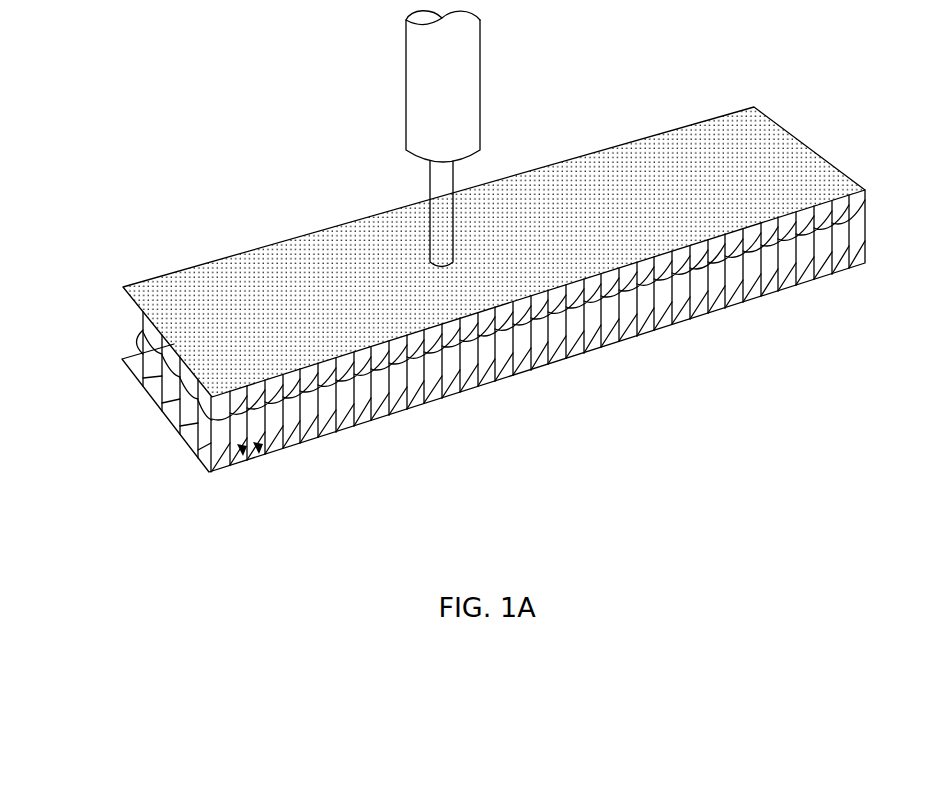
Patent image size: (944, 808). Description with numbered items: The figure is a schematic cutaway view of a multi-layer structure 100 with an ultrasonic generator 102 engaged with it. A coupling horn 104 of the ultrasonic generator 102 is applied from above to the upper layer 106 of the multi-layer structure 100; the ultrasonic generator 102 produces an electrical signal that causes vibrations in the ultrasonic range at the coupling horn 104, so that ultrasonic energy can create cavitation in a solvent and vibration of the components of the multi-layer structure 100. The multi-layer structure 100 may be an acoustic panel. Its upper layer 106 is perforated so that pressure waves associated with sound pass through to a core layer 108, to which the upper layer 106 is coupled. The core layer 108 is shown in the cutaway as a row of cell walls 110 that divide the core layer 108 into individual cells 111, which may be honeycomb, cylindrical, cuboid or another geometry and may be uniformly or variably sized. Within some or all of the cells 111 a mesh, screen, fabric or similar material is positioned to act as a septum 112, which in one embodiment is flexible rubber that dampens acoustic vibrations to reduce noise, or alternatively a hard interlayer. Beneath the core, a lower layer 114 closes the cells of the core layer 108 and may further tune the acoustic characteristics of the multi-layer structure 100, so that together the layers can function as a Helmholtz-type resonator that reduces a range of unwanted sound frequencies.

The multi-layer structure 100 is at (262, 146).
The ultrasonic generator 102 is at (406, 72).
The coupling horn 104 is at (430, 188).
The upper layer 106 is at (218, 259).
The core layer 108 is at (118, 358).
The cell walls 110 is at (182, 432).
The cells 111 is at (260, 454).
The septum 112 is at (158, 404).
The lower layer 114 is at (206, 468).